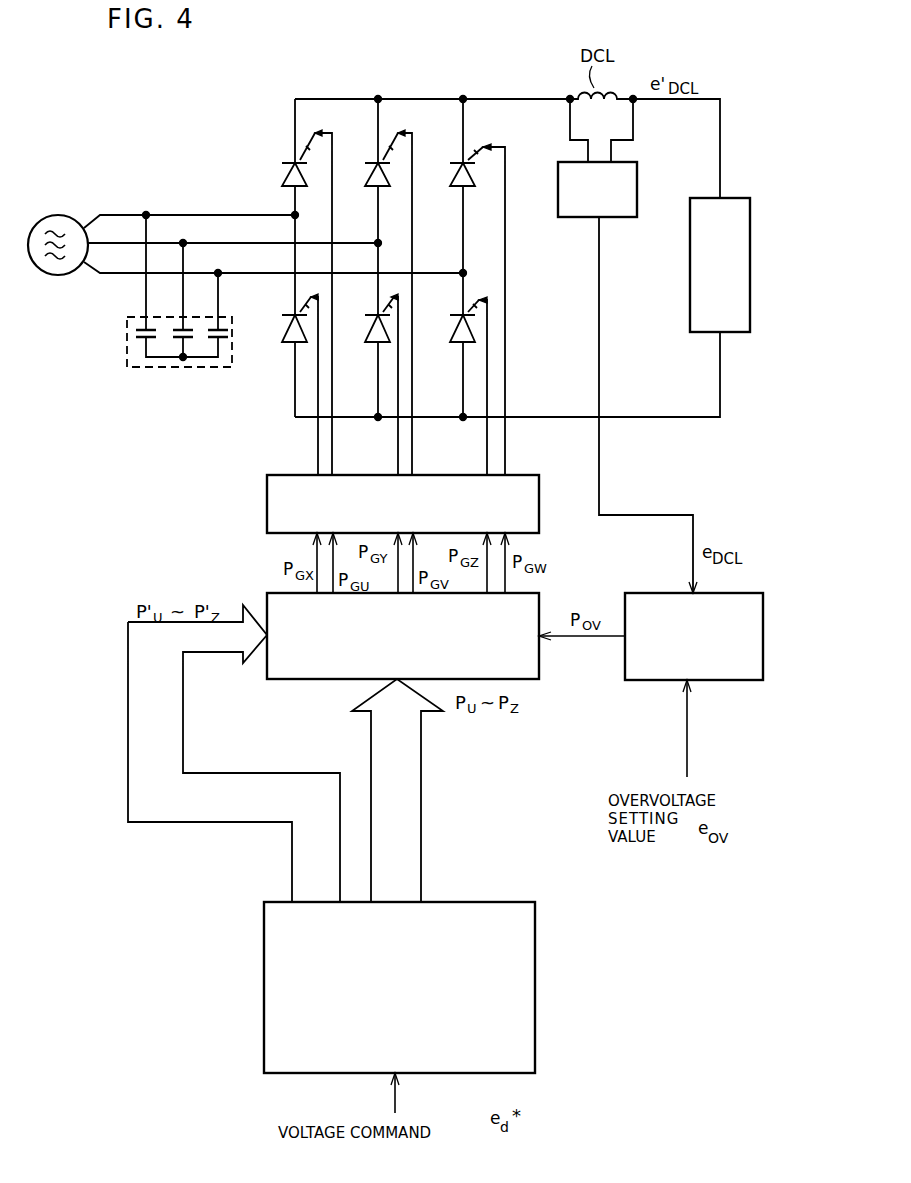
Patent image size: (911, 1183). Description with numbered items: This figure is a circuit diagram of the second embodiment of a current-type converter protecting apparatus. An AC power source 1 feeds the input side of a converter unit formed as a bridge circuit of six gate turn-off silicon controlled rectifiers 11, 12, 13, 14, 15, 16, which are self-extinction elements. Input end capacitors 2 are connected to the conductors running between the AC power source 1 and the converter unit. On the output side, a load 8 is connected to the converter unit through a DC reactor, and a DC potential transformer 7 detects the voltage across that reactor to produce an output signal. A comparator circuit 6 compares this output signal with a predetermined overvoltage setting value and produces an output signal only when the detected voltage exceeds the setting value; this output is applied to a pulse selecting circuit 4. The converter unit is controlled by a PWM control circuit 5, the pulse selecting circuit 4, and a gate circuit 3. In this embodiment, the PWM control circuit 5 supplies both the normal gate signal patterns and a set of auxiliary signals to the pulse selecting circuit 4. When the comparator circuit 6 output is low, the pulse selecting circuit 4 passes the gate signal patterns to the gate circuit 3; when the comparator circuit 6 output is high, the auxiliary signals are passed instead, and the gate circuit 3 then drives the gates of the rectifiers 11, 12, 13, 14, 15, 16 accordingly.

The AC power source 1 is at (58, 215).
The input end capacitors 2 is at (162, 367).
The gate circuit 3 is at (267, 510).
The pulse selecting circuit 4 is at (315, 680).
The PWM control circuit 5 is at (535, 955).
The comparator circuit 6 is at (716, 680).
The DC potential transformer 7 is at (637, 176).
The load 8 is at (690, 288).
The gate turn-off silicon controlled rectifier 11 is at (284, 180).
The gate turn-off silicon controlled rectifier 12 is at (365, 187).
The gate turn-off silicon controlled rectifier 13 is at (450, 188).
The gate turn-off silicon controlled rectifier 14 is at (283, 337).
The gate turn-off silicon controlled rectifier 15 is at (366, 337).
The gate turn-off silicon controlled rectifier 16 is at (451, 337).